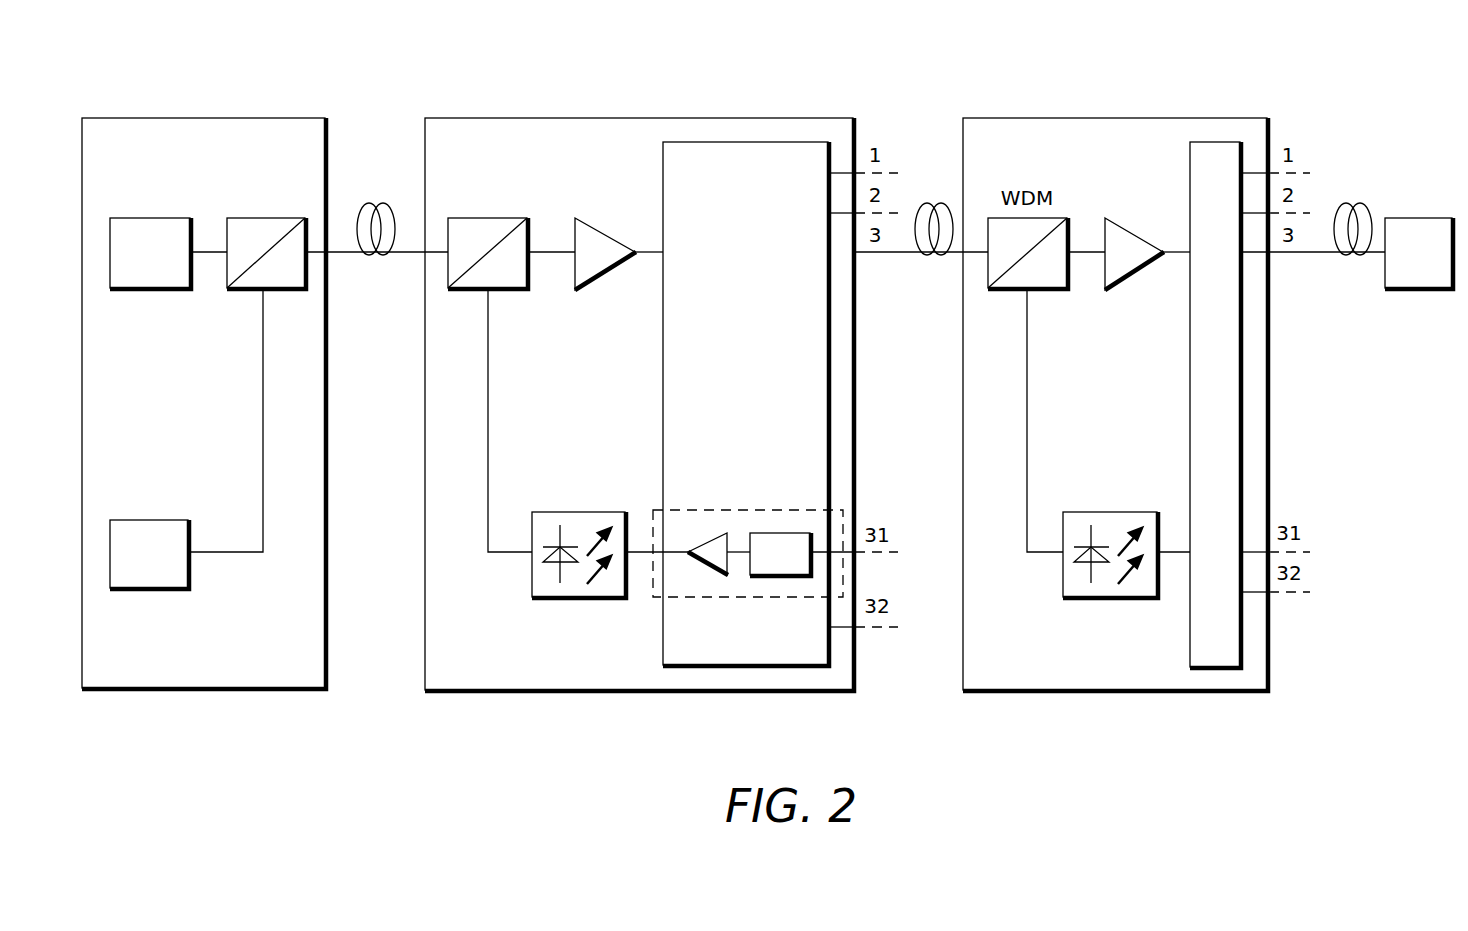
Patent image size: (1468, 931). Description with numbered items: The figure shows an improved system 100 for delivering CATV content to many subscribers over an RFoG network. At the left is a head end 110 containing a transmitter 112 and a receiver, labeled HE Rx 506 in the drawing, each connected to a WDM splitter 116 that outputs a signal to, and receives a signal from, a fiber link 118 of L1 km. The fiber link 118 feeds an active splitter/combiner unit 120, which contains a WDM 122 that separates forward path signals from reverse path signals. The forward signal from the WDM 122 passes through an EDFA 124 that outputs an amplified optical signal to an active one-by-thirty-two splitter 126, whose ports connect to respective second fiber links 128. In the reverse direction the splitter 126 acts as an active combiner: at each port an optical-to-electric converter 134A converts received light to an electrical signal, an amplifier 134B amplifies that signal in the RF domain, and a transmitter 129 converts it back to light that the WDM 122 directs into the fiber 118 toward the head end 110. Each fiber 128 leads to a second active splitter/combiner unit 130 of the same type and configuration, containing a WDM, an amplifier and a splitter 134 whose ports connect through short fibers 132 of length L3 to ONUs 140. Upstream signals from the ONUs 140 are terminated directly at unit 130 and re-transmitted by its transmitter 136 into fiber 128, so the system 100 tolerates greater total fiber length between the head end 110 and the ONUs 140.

The system 100 is at (1340, 119).
The head end 110 is at (205, 117).
The transmitter 112 is at (150, 217).
The WDM splitter 116 is at (238, 217).
The fiber link 118 is at (390, 256).
The active splitter/combiner unit 120 is at (600, 117).
The WDM 122 is at (515, 218).
The EDFA 124 is at (595, 228).
The active 1×32 splitter 126 is at (663, 398).
The second fiber link 128 is at (918, 255).
The transmitter 129 is at (578, 510).
The second active splitter/combiner unit 130 is at (1130, 117).
The fiber 132 is at (1328, 255).
The splitter 134 is at (1190, 398).
The optical-to-electric converter (OEC) 134A is at (795, 533).
The amplifier 134B is at (708, 535).
The transmitter 136 is at (1113, 510).
The ONU 140 is at (1419, 216).
The head end receiver (HE Rx) 506 is at (150, 520).